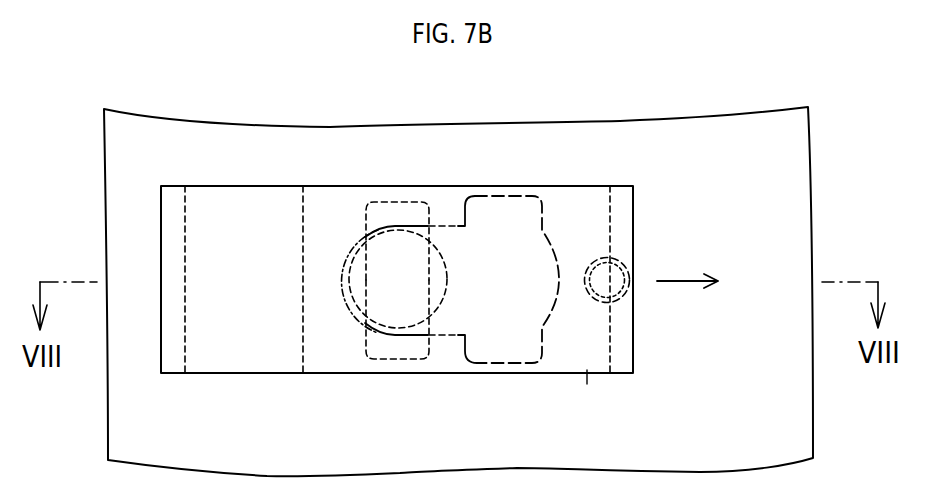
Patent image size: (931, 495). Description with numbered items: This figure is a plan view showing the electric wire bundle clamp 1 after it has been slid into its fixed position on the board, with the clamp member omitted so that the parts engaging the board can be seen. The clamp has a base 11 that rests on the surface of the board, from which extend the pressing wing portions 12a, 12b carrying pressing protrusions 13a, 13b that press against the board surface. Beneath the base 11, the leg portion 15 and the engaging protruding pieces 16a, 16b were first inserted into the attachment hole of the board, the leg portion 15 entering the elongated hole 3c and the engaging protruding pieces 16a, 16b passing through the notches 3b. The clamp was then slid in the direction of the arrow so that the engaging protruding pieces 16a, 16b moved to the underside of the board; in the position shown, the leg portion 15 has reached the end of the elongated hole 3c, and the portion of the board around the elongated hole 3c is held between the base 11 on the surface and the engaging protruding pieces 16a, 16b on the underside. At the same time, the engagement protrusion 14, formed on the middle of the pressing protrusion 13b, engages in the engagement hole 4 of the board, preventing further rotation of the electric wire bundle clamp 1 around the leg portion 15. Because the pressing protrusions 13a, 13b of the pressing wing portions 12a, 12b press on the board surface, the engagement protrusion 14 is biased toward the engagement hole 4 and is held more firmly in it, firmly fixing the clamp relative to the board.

The electric wire bundle clamp 1 is at (624, 171).
The notches 3b is at (527, 197).
The elongated hole 3c is at (347, 262).
The engagement hole 4 is at (621, 298).
The base 11 is at (451, 370).
The pressing wing portion 12a is at (243, 366).
The pressing wing portion 12b is at (590, 393).
The pressing protrusion 13a is at (172, 371).
The pressing protrusion 13b is at (628, 373).
The engagement protrusion 14 is at (622, 258).
The leg portion 15 is at (438, 253).
The engaging protruding piece 16a is at (390, 360).
The engaging protruding piece 16b is at (390, 202).